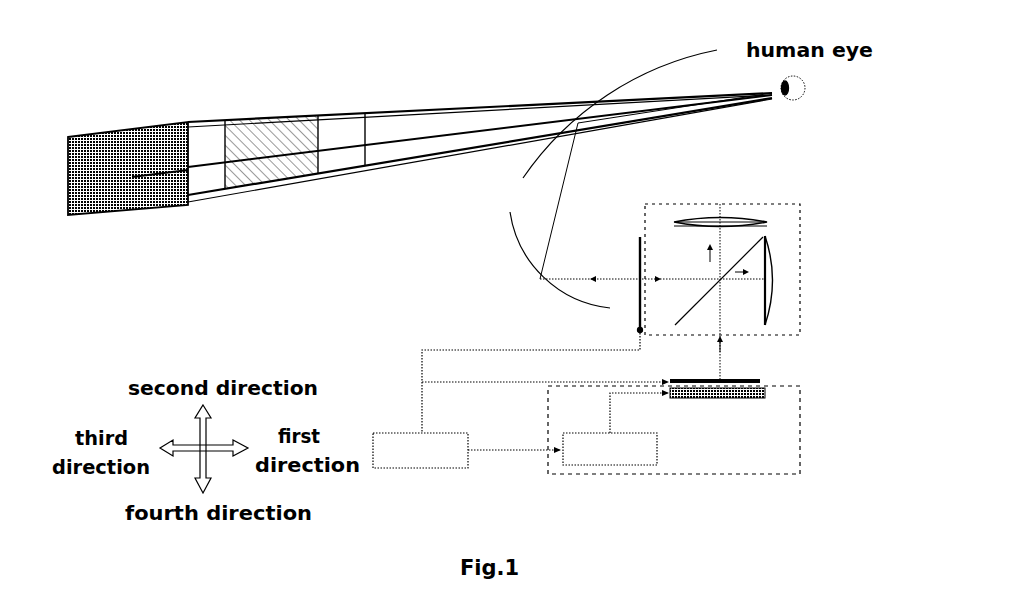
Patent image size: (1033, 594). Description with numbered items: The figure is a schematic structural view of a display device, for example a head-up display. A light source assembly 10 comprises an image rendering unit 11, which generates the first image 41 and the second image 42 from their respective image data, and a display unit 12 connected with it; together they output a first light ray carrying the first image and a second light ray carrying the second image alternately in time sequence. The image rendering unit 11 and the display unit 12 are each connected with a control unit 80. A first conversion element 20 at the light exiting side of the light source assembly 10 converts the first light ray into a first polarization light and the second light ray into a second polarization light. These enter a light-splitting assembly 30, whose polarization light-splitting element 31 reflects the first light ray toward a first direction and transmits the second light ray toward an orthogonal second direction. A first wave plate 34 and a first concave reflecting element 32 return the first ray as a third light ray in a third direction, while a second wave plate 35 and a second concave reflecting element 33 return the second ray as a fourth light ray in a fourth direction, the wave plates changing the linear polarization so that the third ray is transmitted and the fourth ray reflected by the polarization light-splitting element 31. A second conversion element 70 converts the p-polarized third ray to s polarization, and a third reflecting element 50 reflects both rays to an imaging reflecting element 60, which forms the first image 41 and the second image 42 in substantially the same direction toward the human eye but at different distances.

The light source assembly 10 is at (770, 474).
The image rendering unit 11 is at (610, 449).
The display unit 12 is at (762, 398).
The first conversion element 20 is at (757, 381).
The light-splitting assembly 30 is at (800, 210).
The polarization light-splitting element 31 is at (752, 250).
The first concave reflecting element 32 is at (772, 317).
The second concave reflecting element 33 is at (732, 217).
The first wave plate 34 is at (768, 295).
The second wave plate 35 is at (700, 217).
The first image 41 is at (100, 213).
The second image 42 is at (405, 110).
The third reflecting element 50 is at (525, 268).
The imaging reflecting element 60 is at (638, 78).
The second conversion element 70 is at (638, 237).
The control unit 80 is at (420, 450).